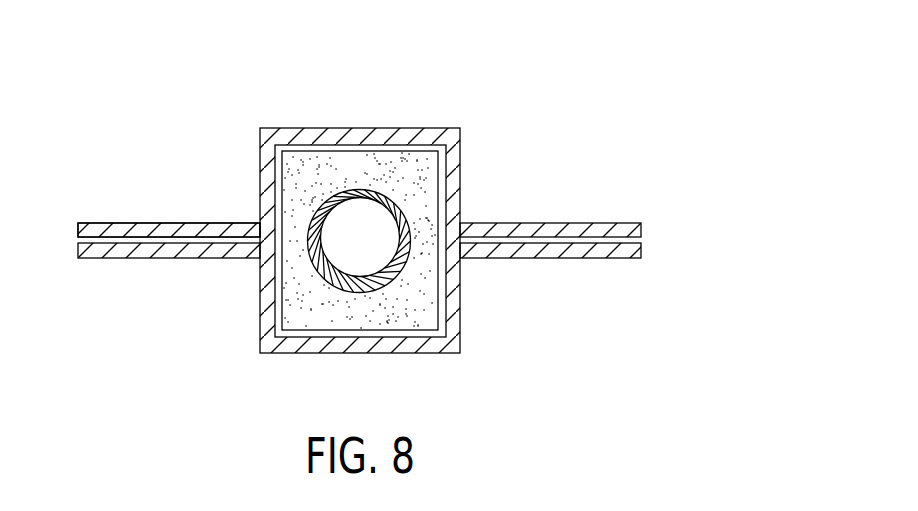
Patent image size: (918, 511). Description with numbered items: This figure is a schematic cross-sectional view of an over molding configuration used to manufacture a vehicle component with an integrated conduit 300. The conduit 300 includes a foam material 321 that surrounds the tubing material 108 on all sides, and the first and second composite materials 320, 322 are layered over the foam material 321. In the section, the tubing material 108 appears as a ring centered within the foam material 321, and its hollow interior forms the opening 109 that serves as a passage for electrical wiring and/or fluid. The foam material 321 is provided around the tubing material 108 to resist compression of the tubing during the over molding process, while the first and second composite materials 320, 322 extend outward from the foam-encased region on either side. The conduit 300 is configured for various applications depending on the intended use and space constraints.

The conduit 300 is at (506, 116).
The foam material 321 is at (298, 170).
The second composite material 322 is at (152, 223).
The first composite material 320 is at (142, 259).
The tubing material 108 is at (322, 273).
The opening 109 is at (363, 250).